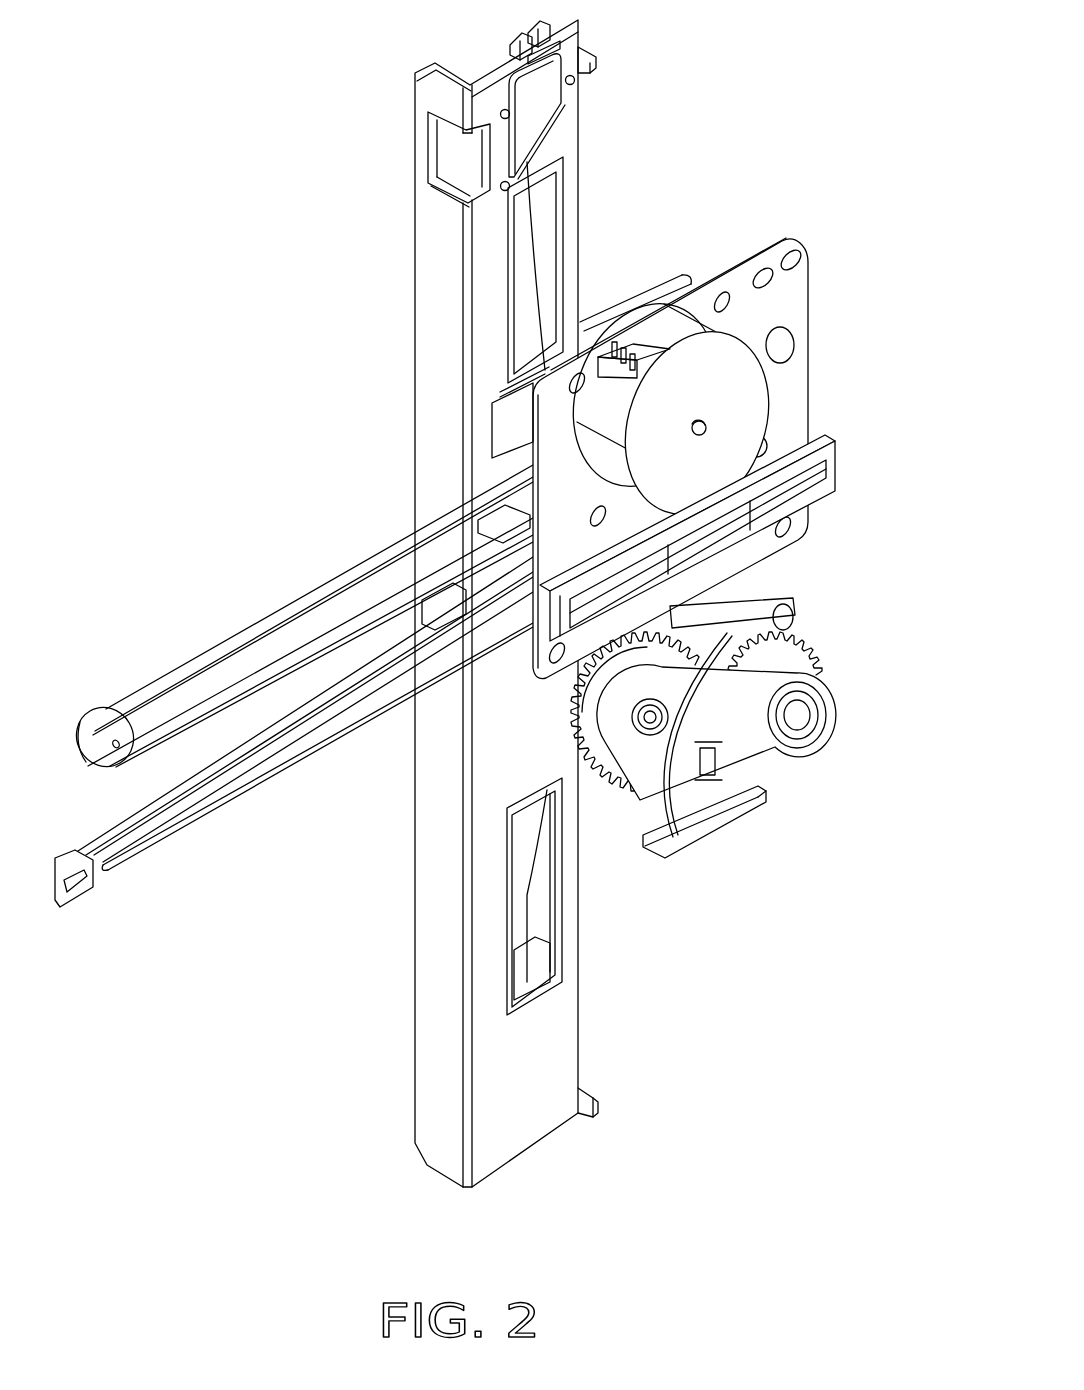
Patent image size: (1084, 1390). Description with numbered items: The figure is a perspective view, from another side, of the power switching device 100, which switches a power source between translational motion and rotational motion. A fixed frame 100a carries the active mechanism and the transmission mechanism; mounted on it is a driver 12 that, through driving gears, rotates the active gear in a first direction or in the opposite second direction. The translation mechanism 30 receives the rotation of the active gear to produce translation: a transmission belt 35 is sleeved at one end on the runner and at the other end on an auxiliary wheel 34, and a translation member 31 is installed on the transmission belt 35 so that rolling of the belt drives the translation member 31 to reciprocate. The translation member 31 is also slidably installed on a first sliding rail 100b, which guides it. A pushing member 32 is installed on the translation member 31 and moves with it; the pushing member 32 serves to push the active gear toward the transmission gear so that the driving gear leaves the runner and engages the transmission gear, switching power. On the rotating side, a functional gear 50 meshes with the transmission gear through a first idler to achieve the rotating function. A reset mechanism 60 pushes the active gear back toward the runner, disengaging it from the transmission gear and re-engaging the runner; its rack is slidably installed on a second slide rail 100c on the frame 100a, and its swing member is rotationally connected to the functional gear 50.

The power switching device 100 is at (184, 34).
The frame 100a is at (784, 298).
The first sliding rail 100b is at (232, 762).
The second slide rail 100c is at (823, 484).
The driver 12 is at (748, 400).
The translation mechanism 30 is at (651, 166).
The translation member 31 is at (568, 208).
The pushing member 32 is at (660, 297).
The auxiliary wheel 34 is at (102, 742).
The transmission belt 35 is at (297, 598).
The functional gear 50 is at (812, 641).
The reset mechanism 60 is at (753, 758).